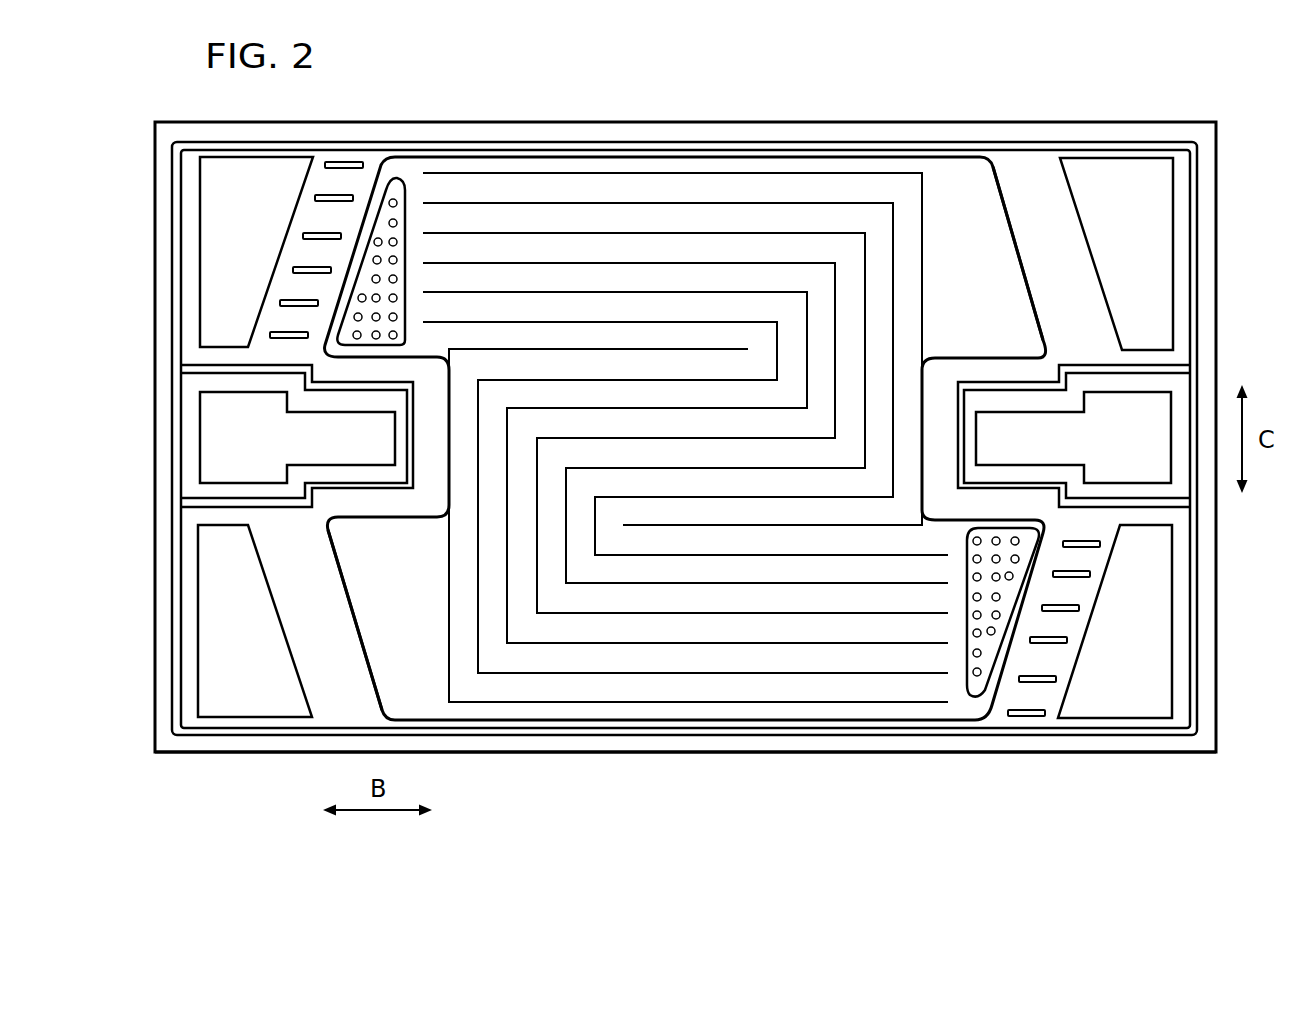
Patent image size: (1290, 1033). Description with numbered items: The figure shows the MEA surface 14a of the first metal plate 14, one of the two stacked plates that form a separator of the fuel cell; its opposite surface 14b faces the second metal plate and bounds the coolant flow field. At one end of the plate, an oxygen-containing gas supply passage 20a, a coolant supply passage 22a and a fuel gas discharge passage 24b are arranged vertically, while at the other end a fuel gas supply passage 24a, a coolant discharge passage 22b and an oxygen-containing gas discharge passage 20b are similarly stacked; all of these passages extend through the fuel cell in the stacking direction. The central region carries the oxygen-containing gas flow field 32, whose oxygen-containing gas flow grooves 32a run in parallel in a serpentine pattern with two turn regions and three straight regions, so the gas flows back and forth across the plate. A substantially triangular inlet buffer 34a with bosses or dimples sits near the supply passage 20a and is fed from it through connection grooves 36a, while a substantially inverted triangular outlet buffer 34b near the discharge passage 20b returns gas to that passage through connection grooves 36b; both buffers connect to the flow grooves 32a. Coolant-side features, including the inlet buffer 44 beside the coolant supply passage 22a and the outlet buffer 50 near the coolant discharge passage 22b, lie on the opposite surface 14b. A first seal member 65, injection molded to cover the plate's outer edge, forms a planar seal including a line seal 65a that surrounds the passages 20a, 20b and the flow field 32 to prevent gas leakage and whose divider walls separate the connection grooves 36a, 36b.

The first metal plate 14 is at (873, 83).
The MEA surface 14a is at (626, 738).
The surface 14b is at (853, 740).
The oxygen-containing gas supply passage 20a is at (256, 252).
The oxygen-containing gas discharge passage 20b is at (1115, 621).
The coolant supply passage 22a is at (297, 436).
The coolant discharge passage 22b is at (1074, 436).
The fuel gas supply passage 24a is at (1116, 254).
The fuel gas discharge passage 24b is at (255, 621).
The oxygen-containing gas flow field 32 is at (686, 400).
The oxygen-containing gas flow grooves 32a is at (620, 233).
The inlet buffer 34a is at (397, 182).
The outlet buffer 34b is at (975, 698).
The connection grooves 36a is at (305, 320).
The connection grooves 36b is at (1082, 557).
The inlet buffer 44 is at (326, 552).
The outlet buffer 50 is at (1045, 323).
The first seal member 65 is at (873, 140).
The line seal 65a is at (480, 149).